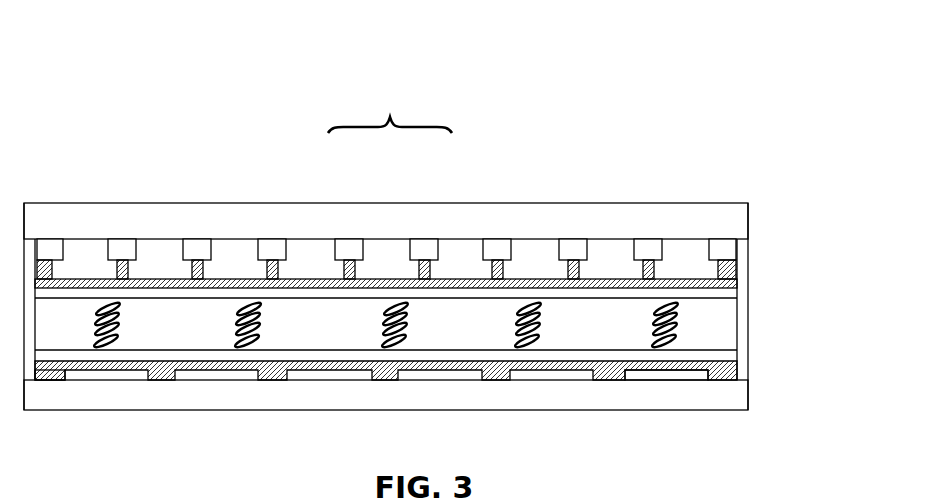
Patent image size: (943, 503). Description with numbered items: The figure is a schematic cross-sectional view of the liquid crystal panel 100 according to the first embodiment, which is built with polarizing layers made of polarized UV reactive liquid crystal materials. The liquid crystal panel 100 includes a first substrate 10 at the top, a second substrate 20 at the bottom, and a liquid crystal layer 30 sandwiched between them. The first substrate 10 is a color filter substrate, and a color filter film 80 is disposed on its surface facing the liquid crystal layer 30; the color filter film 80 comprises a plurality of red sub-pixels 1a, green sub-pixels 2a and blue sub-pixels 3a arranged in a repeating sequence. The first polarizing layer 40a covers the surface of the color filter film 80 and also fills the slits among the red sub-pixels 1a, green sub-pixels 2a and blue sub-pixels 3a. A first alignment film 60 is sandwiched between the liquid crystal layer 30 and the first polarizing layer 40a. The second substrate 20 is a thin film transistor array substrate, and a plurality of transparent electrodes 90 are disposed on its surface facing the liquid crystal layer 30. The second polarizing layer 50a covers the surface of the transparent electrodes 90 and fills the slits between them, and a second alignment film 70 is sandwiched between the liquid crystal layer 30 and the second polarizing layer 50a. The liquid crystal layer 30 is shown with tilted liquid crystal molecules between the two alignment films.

The liquid crystal panel 100 is at (540, 138).
The first substrate 10 is at (717, 218).
The second substrate 20 is at (722, 398).
The liquid crystal layer 30 is at (720, 333).
The first alignment film 60 is at (433, 221).
The second alignment film 70 is at (433, 416).
The color filter film 80 is at (390, 109).
The red sub-pixels 1a is at (312, 243).
The green sub-pixels 2a is at (388, 245).
The blue sub-pixels 3a is at (465, 245).
The first polarizing layer 40a is at (45, 257).
The second polarizing layer 50a is at (52, 370).
The transparent electrodes 90 is at (672, 372).